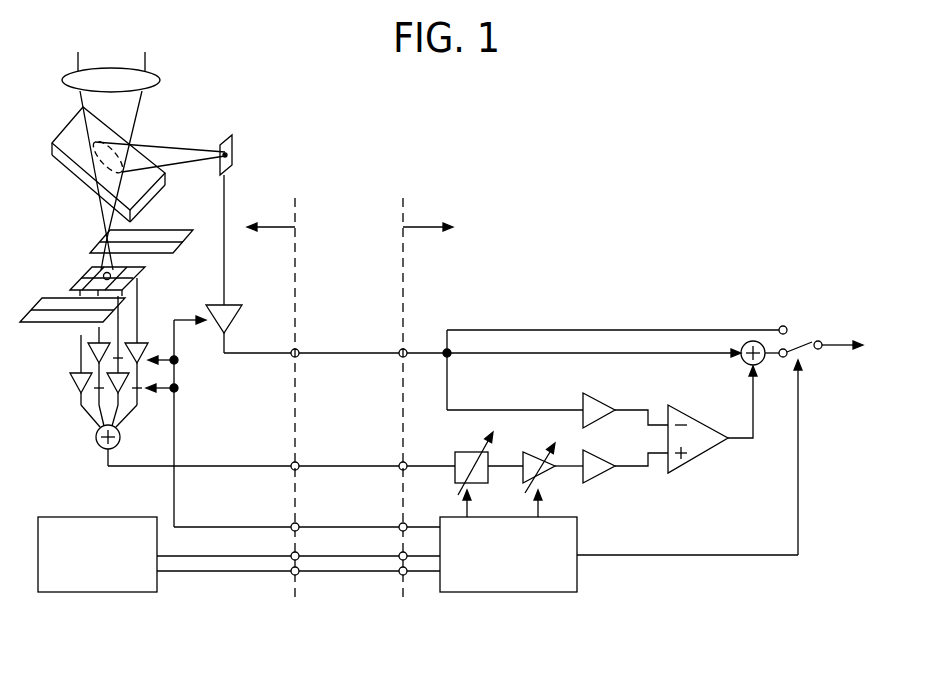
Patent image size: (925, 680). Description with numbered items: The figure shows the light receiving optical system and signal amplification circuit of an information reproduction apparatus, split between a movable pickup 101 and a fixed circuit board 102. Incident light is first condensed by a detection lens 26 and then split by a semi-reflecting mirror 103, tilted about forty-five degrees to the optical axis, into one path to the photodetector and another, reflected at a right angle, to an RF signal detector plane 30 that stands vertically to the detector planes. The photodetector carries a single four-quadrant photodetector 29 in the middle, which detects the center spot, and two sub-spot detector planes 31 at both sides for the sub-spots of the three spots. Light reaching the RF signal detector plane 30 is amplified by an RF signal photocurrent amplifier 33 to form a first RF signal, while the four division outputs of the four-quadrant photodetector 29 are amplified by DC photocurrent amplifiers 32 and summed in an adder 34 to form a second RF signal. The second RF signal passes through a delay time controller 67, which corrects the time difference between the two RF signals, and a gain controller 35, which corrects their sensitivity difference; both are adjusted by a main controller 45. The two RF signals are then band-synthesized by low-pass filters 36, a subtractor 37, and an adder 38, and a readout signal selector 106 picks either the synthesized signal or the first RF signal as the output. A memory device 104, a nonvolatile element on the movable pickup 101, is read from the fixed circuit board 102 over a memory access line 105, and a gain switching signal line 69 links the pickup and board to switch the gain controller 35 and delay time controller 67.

The detection lens 26 is at (158, 82).
The semi-reflecting mirror 103 is at (67, 157).
The RF signal detector plane 30 is at (233, 147).
The sub-spot detector planes 31 is at (98, 243).
The four-quadrant photodetector 29 is at (68, 286).
The DC photocurrent amplifiers 32 is at (70, 381).
The adder 34 is at (96, 438).
The RF signal photocurrent amplifier 33 is at (243, 316).
The movable pickup 101 is at (271, 399).
The fixed circuit board 102 is at (430, 399).
The delay time controller 67 is at (470, 452).
The gain controller 35 is at (536, 452).
The low-pass filters 36 is at (605, 393).
The subtractor 37 is at (710, 451).
The adder 38 is at (745, 364).
The readout signal selector 106 is at (803, 338).
The gain switching signal line 69 is at (362, 527).
The memory access line 105 is at (353, 573).
The memory device 104 is at (105, 592).
The main controller 45 is at (497, 592).